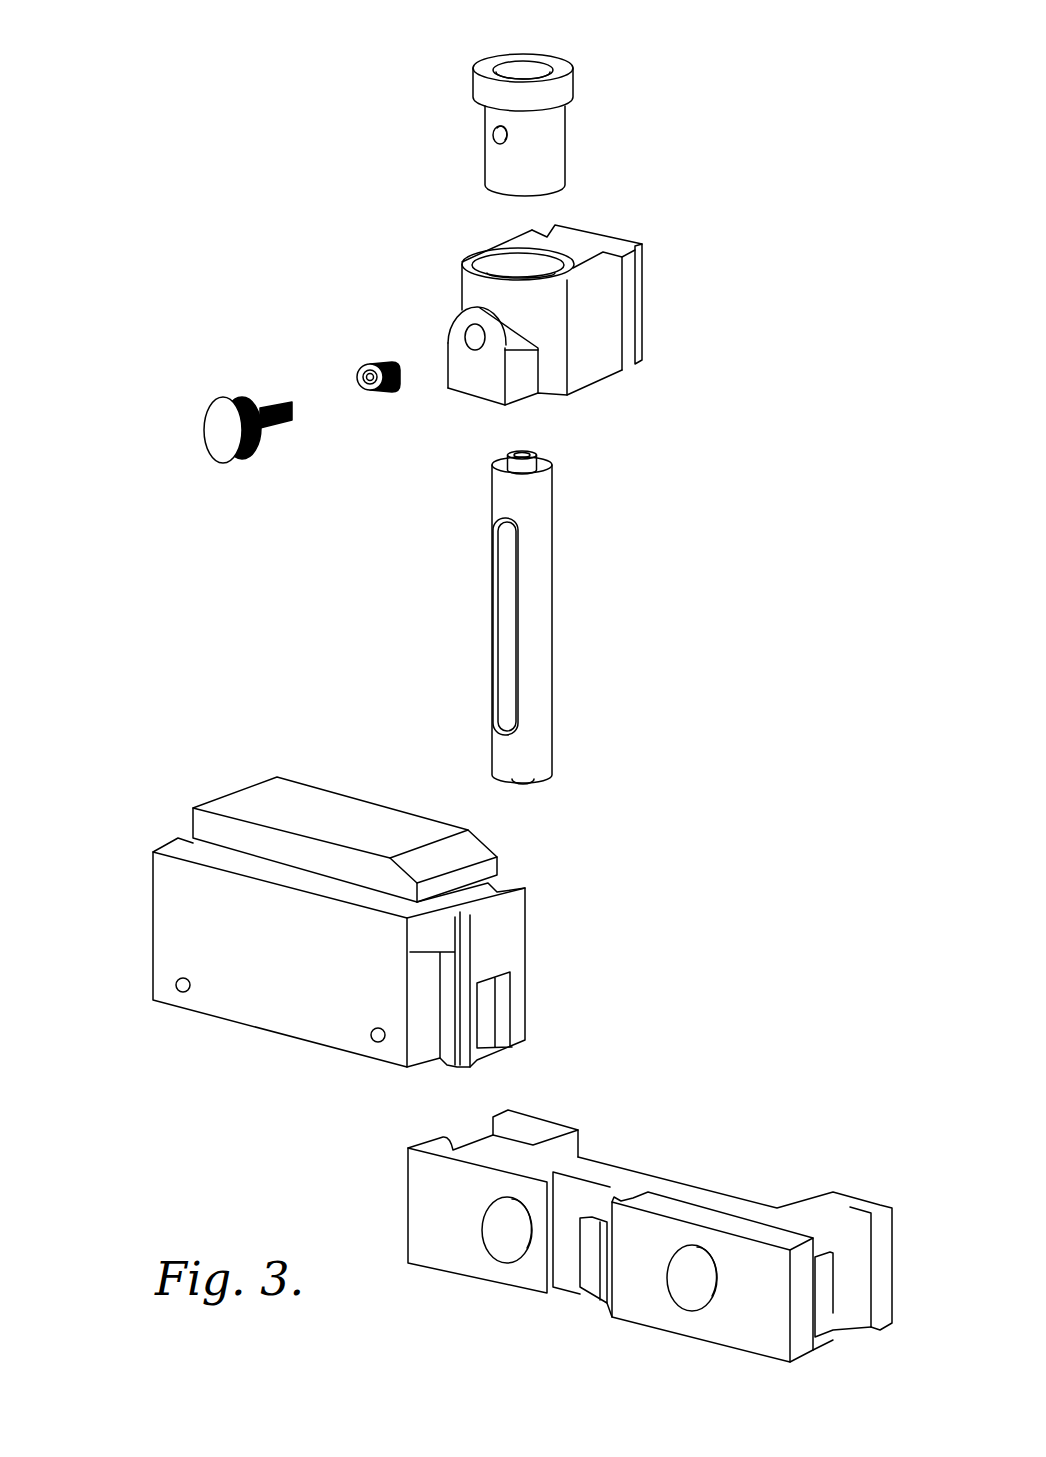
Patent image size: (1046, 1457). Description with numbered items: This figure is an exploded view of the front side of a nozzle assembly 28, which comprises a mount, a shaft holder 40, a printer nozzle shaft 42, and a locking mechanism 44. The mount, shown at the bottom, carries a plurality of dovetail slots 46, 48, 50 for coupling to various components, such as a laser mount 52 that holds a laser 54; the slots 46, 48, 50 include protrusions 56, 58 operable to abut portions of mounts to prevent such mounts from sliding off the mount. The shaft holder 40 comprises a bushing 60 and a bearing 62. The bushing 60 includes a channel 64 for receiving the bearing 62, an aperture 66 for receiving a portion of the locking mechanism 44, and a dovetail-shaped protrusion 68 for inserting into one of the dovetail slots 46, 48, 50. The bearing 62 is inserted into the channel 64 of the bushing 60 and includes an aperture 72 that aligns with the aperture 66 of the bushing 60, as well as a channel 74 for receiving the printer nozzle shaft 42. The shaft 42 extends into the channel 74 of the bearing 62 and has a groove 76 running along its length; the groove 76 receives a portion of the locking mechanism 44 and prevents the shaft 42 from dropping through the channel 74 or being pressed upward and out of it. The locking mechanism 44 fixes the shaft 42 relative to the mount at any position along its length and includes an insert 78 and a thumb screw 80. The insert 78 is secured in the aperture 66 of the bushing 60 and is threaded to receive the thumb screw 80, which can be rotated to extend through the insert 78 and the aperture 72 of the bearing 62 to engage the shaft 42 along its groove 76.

The nozzle assembly 28 is at (90, 118).
The shaft holder 40 is at (628, 155).
The printer nozzle shaft 42 is at (532, 617).
The locking mechanism 44 is at (290, 367).
The dovetail slot 46 is at (520, 1120).
The dovetail slot 48 is at (659, 1227).
The dovetail slot 50 is at (838, 1220).
The laser mount 52 is at (324, 903).
The laser 54 is at (318, 800).
The protrusion 56 is at (592, 1287).
The protrusion 58 is at (827, 1317).
The bushing 60 is at (549, 304).
The bearing 62 is at (508, 98).
The channel 64 is at (498, 262).
The aperture 66 is at (468, 333).
The dovetail-shaped protrusion 68 is at (613, 242).
The aperture 72 is at (487, 139).
The channel 74 is at (540, 58).
The groove 76 is at (502, 579).
The insert 78 is at (377, 390).
The thumb screw 80 is at (220, 442).